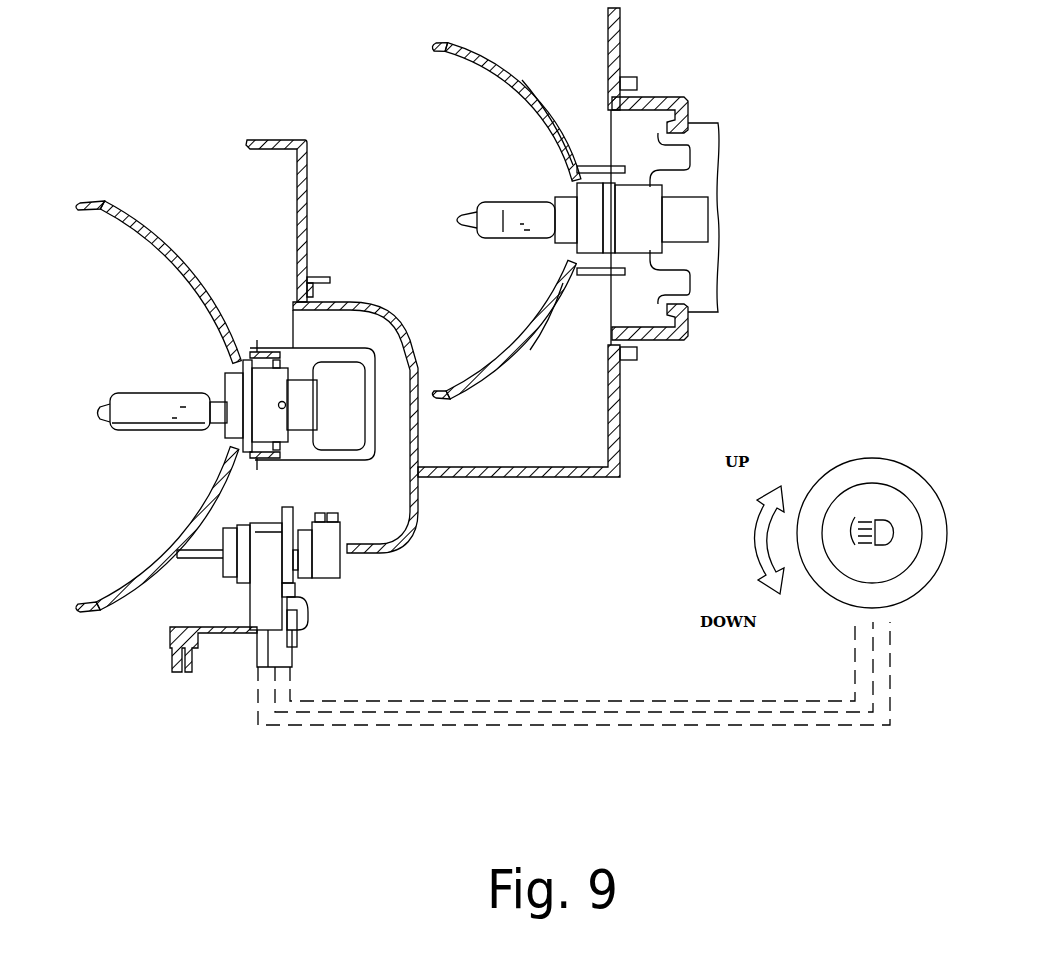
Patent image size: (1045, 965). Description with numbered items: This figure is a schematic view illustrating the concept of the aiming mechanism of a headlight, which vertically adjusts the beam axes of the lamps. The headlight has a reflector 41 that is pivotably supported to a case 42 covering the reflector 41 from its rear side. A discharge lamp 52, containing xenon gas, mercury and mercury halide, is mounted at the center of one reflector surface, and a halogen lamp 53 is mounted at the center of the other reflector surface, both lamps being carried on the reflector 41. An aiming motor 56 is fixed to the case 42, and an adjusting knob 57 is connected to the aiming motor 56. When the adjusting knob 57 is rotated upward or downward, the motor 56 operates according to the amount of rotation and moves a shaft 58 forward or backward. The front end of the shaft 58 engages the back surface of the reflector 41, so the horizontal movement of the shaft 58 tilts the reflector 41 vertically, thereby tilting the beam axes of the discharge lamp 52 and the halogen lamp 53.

The reflector 41 is at (170, 252).
The case 42 is at (310, 190).
The discharge lamp 52 is at (130, 394).
The halogen lamp 53 is at (498, 198).
The aiming motor 56 is at (323, 582).
The adjusting knob 57 is at (883, 467).
The shaft 58 is at (190, 558).